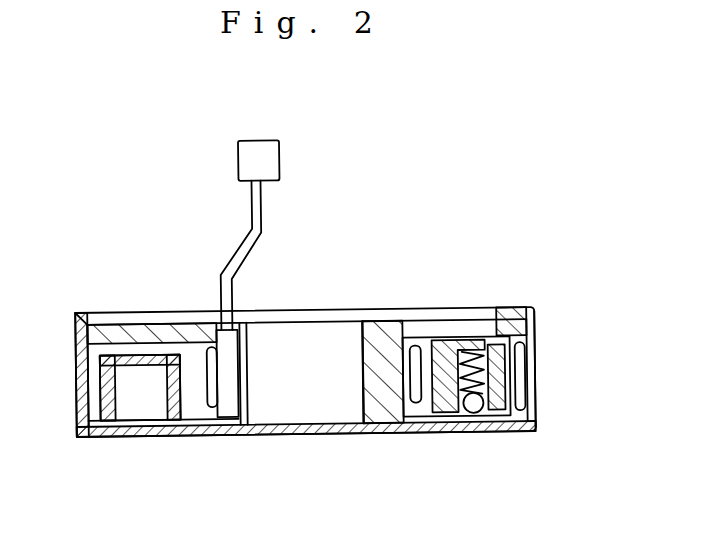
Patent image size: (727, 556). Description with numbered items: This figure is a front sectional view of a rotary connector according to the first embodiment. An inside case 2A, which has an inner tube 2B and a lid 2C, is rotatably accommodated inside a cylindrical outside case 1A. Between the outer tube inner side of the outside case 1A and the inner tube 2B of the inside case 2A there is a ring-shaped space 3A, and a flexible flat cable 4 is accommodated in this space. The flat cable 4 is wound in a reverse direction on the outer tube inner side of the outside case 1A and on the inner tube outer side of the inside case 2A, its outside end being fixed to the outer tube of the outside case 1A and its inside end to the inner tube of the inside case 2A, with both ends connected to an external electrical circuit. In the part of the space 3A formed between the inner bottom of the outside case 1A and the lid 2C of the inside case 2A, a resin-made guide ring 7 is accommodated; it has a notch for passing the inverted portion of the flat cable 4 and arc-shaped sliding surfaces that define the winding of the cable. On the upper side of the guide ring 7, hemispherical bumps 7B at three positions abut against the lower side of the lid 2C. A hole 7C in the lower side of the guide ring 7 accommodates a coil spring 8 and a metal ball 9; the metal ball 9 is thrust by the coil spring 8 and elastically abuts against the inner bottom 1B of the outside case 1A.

The outside case 1A is at (533, 391).
The inner bottom 1B is at (520, 430).
The inside case 2A is at (387, 331).
The inner tube 2B is at (358, 396).
The lid 2C is at (505, 331).
The ring-shaped space 3A is at (437, 348).
The flexible flat cable 4 is at (406, 406).
The guide ring 7 is at (438, 404).
The hemispherical bumps 7B is at (477, 351).
The hole 7C is at (512, 352).
The coil spring 8 is at (496, 378).
The metal ball 9 is at (477, 410).